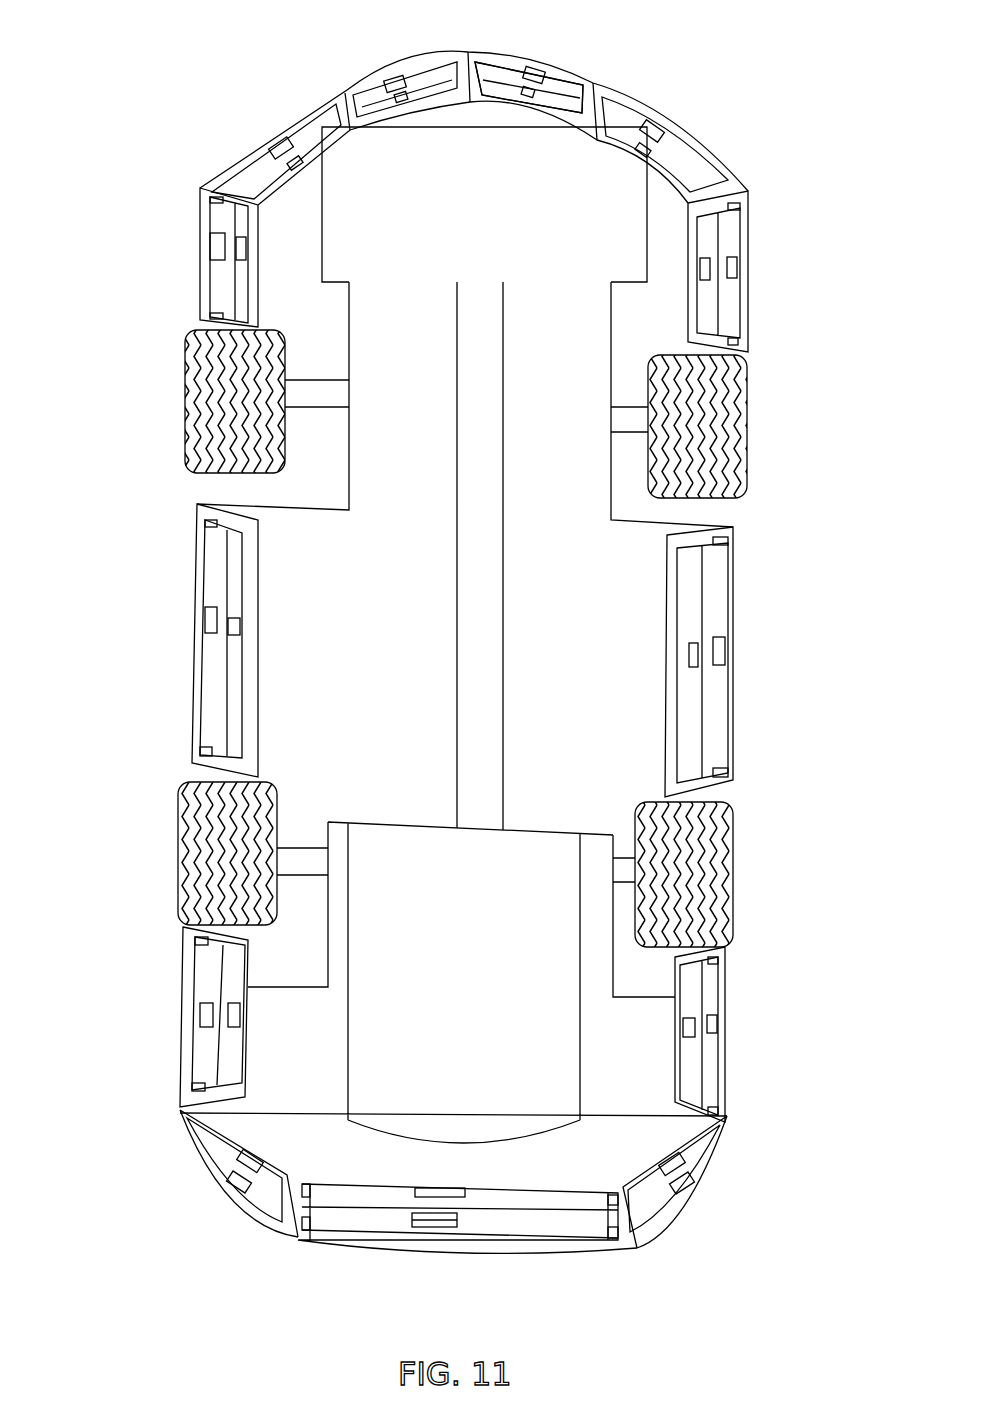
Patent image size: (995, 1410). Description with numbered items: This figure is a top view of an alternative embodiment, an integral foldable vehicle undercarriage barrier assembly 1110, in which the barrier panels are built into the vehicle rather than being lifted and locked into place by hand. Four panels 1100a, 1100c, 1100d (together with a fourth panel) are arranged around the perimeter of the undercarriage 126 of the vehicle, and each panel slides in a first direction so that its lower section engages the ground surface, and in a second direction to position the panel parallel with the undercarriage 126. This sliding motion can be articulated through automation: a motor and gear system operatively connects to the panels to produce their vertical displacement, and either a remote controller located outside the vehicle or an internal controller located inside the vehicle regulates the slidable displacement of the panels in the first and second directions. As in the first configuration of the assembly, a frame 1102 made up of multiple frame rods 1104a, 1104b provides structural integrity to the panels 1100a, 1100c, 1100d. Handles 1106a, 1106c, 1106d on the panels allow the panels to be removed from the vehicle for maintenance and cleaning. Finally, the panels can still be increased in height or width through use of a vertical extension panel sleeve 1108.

The undercarriage 126 is at (603, 589).
The integral foldable vehicle undercarriage barrier assembly 1110 is at (203, 58).
The frame 1102 is at (188, 217).
The frame rod 1104a is at (250, 287).
The frame rod 1104b is at (700, 307).
The panel 1100a is at (558, 100).
The panel 1100c is at (747, 662).
The panel 1100d is at (222, 690).
The handle 1106a is at (726, 648).
The handle 1106c is at (422, 1227).
The handle 1106d is at (472, 1197).
The vertical extension panel sleeve 1108 is at (232, 1047).